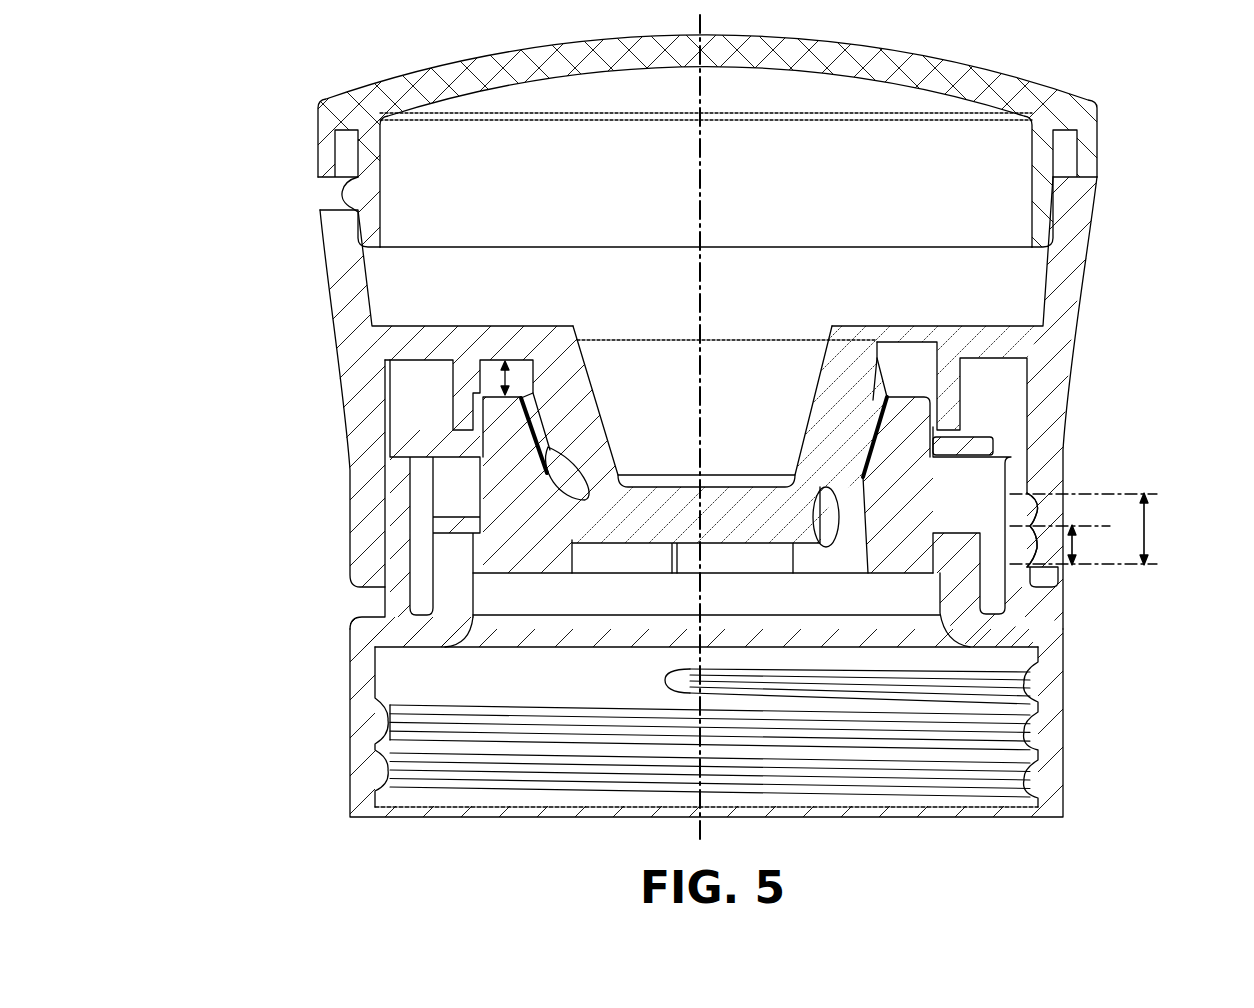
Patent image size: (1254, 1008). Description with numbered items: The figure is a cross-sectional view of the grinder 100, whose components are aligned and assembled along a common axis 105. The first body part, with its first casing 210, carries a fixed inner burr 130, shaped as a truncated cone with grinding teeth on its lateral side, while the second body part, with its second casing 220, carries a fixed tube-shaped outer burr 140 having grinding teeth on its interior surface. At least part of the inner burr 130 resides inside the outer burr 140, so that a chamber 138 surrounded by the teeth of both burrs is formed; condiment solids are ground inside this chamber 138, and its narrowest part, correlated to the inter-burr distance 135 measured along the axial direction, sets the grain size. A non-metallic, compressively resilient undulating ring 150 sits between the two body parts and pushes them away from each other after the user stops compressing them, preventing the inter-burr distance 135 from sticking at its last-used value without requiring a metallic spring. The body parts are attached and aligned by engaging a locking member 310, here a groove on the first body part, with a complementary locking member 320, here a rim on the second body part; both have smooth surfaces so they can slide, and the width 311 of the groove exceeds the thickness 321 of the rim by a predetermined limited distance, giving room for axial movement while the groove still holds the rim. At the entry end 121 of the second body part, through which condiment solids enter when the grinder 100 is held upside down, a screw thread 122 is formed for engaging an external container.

The grinder 100 is at (121, 639).
The common axis 105 is at (700, 595).
The entry end 121 is at (855, 832).
The screw thread 122 is at (423, 721).
The inner burr 130 is at (550, 428).
The inter-burr distance 135 is at (503, 372).
The chamber 138 is at (527, 413).
The outer burr 140 is at (523, 428).
The undulating ring 150 is at (463, 493).
The first casing 210 is at (1047, 380).
The second casing 220 is at (1050, 690).
The locking member 310 is at (1040, 505).
The width of the groove 311 is at (1148, 531).
The complementary locking member 320 is at (1024, 540).
The thickness of the rim 321 is at (1075, 547).